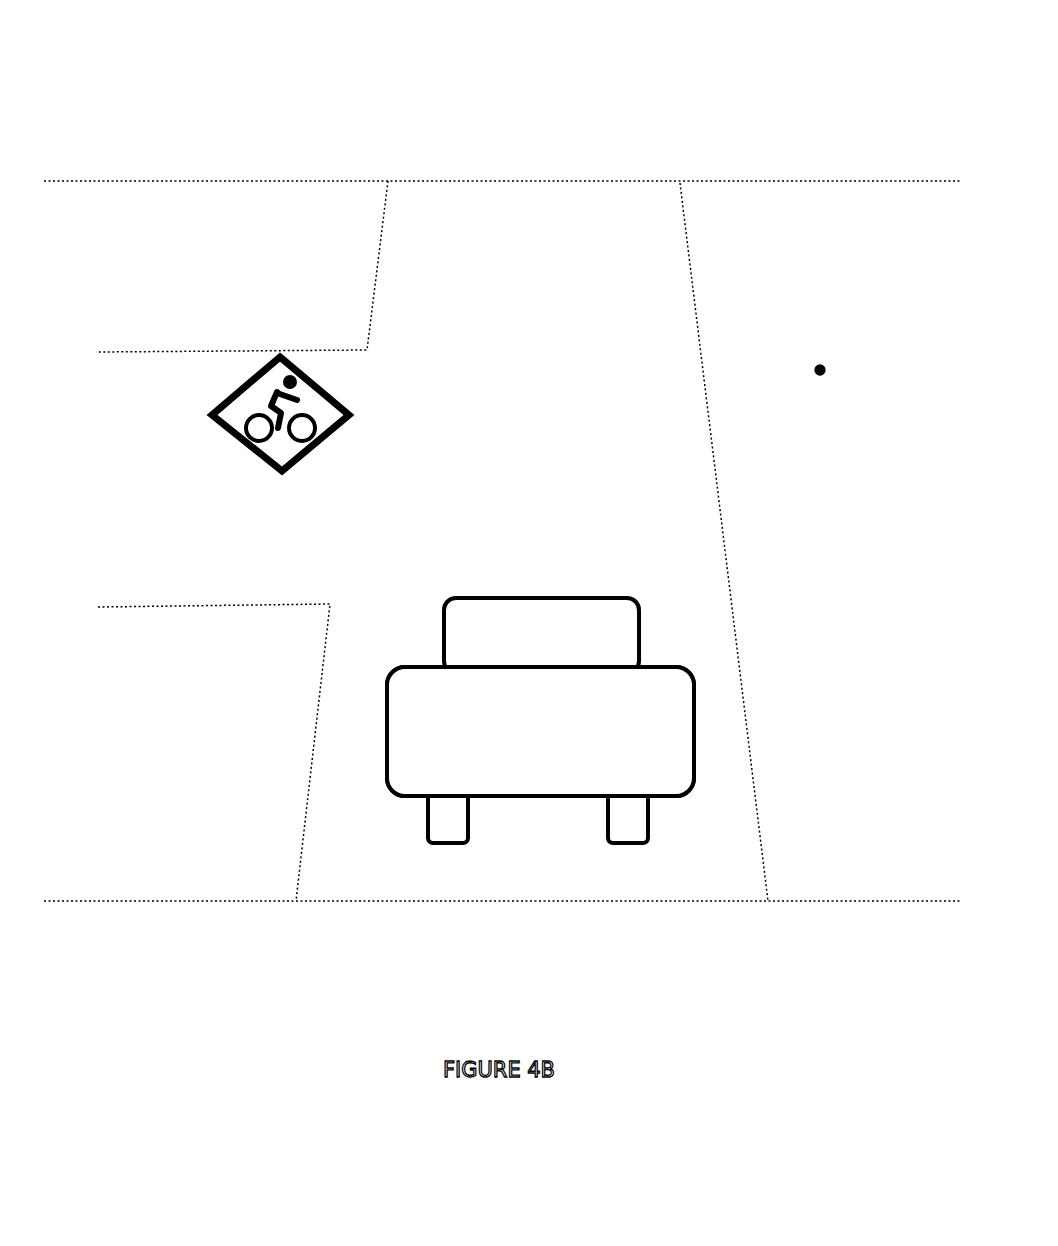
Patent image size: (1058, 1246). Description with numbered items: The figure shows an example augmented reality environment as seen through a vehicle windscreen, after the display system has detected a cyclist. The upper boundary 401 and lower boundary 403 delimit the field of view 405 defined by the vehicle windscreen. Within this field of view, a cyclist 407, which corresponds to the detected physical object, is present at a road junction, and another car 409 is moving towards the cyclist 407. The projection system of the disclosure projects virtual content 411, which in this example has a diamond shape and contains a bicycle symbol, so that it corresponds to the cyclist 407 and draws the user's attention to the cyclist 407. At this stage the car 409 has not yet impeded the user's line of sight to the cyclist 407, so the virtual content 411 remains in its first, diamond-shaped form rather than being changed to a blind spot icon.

The upper boundary 401 is at (150, 181).
The lower boundary 403 is at (210, 901).
The field of view 405 is at (821, 364).
The cyclist 407 is at (310, 402).
The car 409 is at (540, 720).
The virtual content 411 is at (237, 435).